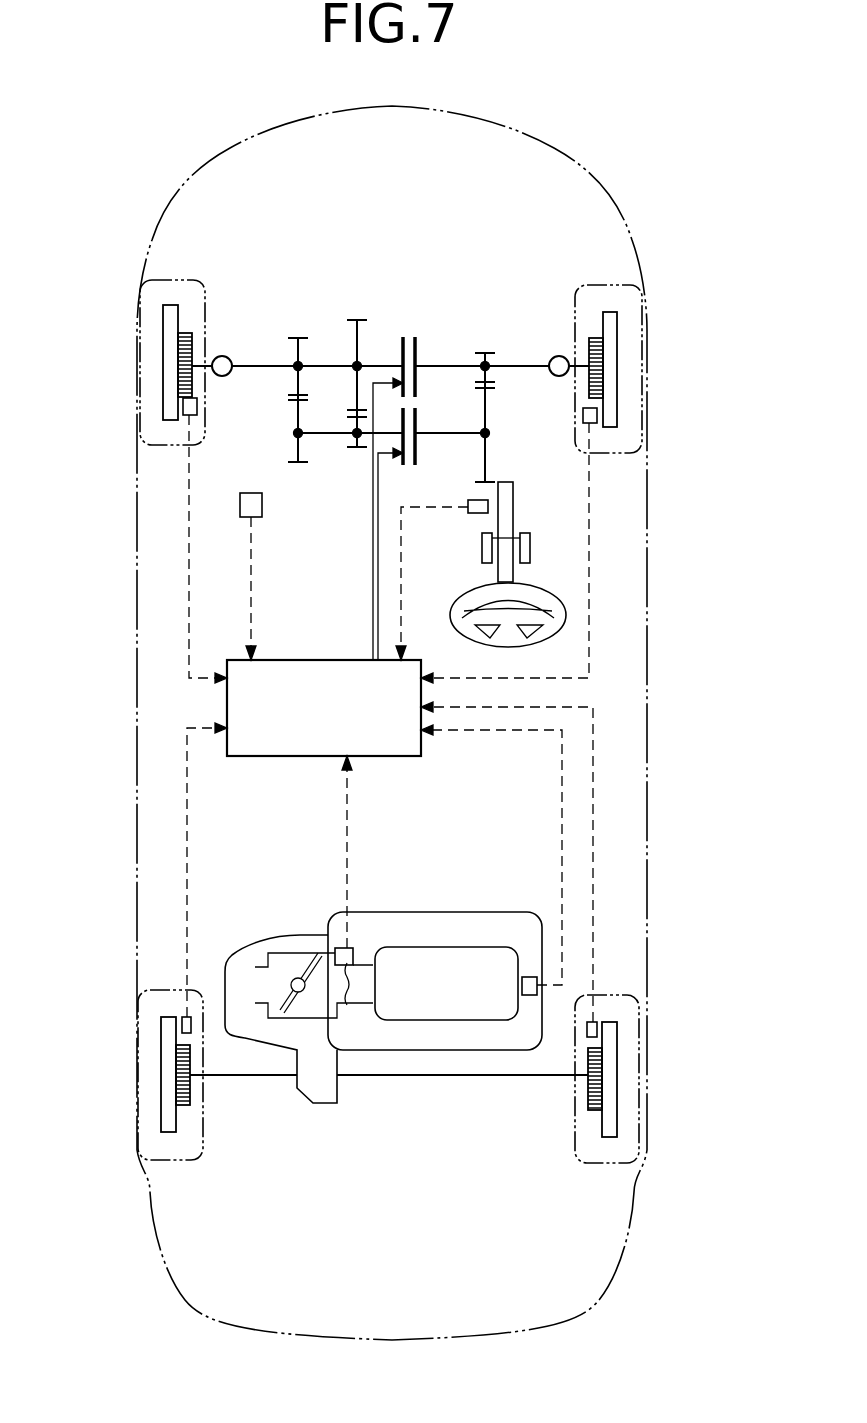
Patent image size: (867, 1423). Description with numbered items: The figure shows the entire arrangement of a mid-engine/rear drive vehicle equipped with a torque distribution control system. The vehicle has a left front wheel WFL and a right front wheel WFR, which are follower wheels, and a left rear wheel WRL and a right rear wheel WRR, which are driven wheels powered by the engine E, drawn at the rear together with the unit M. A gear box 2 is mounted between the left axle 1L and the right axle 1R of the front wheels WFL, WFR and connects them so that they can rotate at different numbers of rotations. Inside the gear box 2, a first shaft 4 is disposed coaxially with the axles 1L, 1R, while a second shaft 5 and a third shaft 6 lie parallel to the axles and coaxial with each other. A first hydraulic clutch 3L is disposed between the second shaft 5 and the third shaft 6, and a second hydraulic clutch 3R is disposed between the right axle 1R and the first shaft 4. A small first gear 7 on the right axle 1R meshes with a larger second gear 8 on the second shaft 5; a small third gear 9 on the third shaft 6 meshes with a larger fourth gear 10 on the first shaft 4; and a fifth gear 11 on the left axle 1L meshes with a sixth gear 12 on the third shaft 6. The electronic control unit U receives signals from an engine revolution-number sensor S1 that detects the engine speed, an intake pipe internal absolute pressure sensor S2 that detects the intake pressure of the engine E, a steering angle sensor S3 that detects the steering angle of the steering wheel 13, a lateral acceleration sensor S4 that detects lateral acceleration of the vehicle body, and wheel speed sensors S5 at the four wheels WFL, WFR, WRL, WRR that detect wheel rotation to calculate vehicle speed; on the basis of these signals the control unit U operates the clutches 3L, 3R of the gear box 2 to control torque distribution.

The left axle 1L is at (254, 364).
The right axle 1R is at (528, 364).
The gear box 2 is at (398, 262).
The first hydraulic clutch 3L is at (425, 420).
The second hydraulic clutch 3R is at (423, 337).
The first shaft 4 is at (374, 363).
The second shaft 5 is at (423, 436).
The third shaft 6 is at (320, 431).
The first gear 7 is at (487, 352).
The second gear 8 is at (492, 480).
The third gear 9 is at (350, 447).
The fourth gear 10 is at (352, 318).
The fifth gear 11 is at (300, 337).
The sixth gear 12 is at (290, 461).
The steering wheel 13 is at (528, 595).
The electronic control unit U is at (324, 708).
The engine E is at (480, 903).
The electric motor M is at (241, 945).
The engine revolution-number sensor S1 is at (522, 985).
The intake pipe internal absolute pressure sensor S2 is at (352, 950).
The steering angle sensor S3 is at (480, 513).
The lateral acceleration sensor S4 is at (262, 503).
The wheel speed sensors S5 is at (688, 960).
The left front wheel WFL is at (137, 355).
The right front wheel WFR is at (642, 367).
The left rear wheel WRL is at (138, 1060).
The right rear wheel WRR is at (640, 1073).